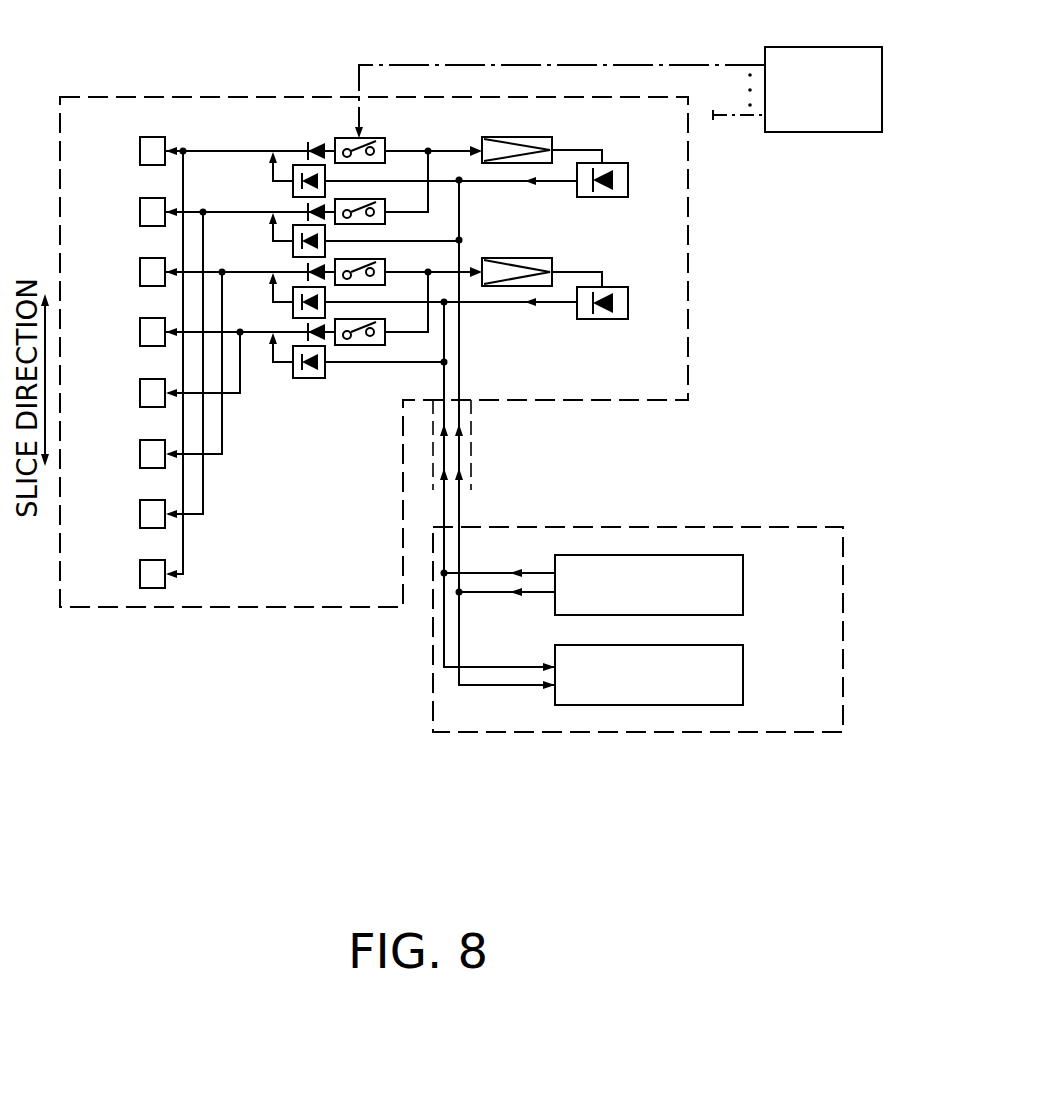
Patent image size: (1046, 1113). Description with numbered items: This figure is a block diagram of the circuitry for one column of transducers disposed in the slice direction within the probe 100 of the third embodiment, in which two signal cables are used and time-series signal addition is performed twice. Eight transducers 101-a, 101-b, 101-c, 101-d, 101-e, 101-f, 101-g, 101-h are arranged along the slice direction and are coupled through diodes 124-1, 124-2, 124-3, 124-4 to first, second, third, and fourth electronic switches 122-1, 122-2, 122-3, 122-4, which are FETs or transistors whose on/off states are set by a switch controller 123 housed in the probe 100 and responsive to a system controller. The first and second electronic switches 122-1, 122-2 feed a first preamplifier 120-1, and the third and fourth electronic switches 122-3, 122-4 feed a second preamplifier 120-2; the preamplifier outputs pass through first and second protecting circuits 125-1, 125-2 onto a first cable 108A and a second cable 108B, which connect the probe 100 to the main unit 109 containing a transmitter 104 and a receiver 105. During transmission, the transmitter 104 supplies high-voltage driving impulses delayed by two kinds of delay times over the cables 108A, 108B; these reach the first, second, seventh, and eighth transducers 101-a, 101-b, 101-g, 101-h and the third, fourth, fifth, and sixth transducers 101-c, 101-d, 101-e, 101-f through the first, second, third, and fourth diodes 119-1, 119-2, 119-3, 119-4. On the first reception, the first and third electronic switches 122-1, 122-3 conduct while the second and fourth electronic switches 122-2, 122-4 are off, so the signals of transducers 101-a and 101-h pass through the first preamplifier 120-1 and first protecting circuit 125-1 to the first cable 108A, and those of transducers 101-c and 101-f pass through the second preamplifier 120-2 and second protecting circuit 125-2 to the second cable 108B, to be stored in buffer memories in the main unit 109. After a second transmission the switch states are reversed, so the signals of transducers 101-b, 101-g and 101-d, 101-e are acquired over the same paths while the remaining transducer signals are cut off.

The probe 100 is at (192, 97).
The first transducer 101-a is at (140, 151).
The second transducer 101-b is at (140, 212).
The third transducer 101-c is at (140, 272).
The fourth transducer 101-d is at (140, 332).
The fifth transducer 101-e is at (140, 393).
The sixth transducer 101-f is at (140, 454).
The seventh transducer 101-g is at (140, 514).
The eighth transducer 101-h is at (140, 574).
The transmitter 104 is at (743, 582).
The receiver 105 is at (743, 675).
The first cable 108A is at (460, 458).
The second cable 108B is at (444, 455).
The main unit 109 is at (638, 665).
The first diode 119-1 is at (291, 182).
The second diode 119-2 is at (291, 242).
The third diode 119-3 is at (291, 302).
The fourth diode 119-4 is at (306, 378).
The first preamplifier 120-1 is at (548, 137).
The second preamplifier 120-2 is at (548, 258).
The first electronic switch 122-1 is at (385, 138).
The second electronic switch 122-2 is at (385, 222).
The third electronic switch 122-3 is at (385, 260).
The fourth electronic switch 122-4 is at (385, 345).
The switch controller 123 is at (860, 132).
The diode 124-1 is at (318, 143).
The diode 124-2 is at (308, 211).
The diode 124-3 is at (308, 271).
The diode 124-4 is at (308, 331).
The first protecting circuit 125-1 is at (628, 163).
The second protecting circuit 125-2 is at (628, 287).